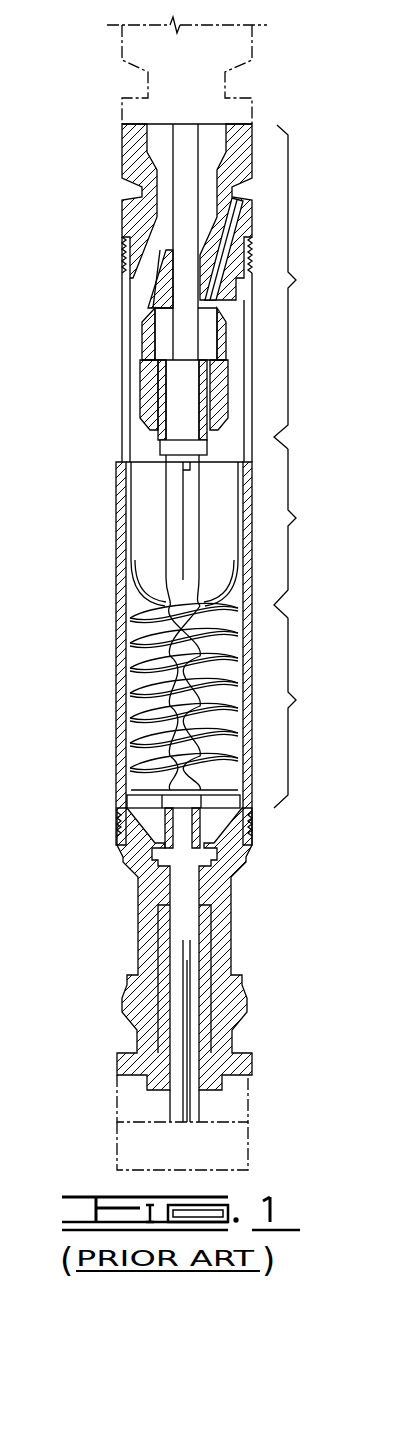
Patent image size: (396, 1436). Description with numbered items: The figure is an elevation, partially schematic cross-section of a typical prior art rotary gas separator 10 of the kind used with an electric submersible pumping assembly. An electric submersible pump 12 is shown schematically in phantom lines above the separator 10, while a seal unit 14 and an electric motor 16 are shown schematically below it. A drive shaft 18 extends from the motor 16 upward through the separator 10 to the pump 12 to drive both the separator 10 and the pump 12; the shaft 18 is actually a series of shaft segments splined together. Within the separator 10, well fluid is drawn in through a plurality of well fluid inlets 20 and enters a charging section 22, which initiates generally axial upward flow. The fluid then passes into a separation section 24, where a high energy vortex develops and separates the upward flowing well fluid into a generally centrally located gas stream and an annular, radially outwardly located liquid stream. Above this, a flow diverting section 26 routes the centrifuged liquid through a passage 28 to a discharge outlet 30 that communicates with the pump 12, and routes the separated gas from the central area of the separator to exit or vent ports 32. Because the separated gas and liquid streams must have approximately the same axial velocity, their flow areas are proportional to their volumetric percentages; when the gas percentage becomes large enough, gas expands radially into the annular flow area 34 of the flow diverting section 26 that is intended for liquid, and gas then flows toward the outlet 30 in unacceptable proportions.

The rotary gas separator 10 is at (107, 657).
The electric submersible pump 12 is at (233, 53).
The seal unit 14 is at (222, 1107).
The electric motor 16 is at (210, 1152).
The drive shaft 18 is at (188, 182).
The well fluid inlets 20 is at (137, 862).
The charging section 22 is at (229, 705).
The separation section 24 is at (227, 533).
The flow diverting section 26 is at (226, 293).
The passage 28 is at (143, 287).
The discharge outlet 30 is at (148, 125).
The vent ports 32 is at (240, 208).
The annular flow area 34 is at (235, 362).